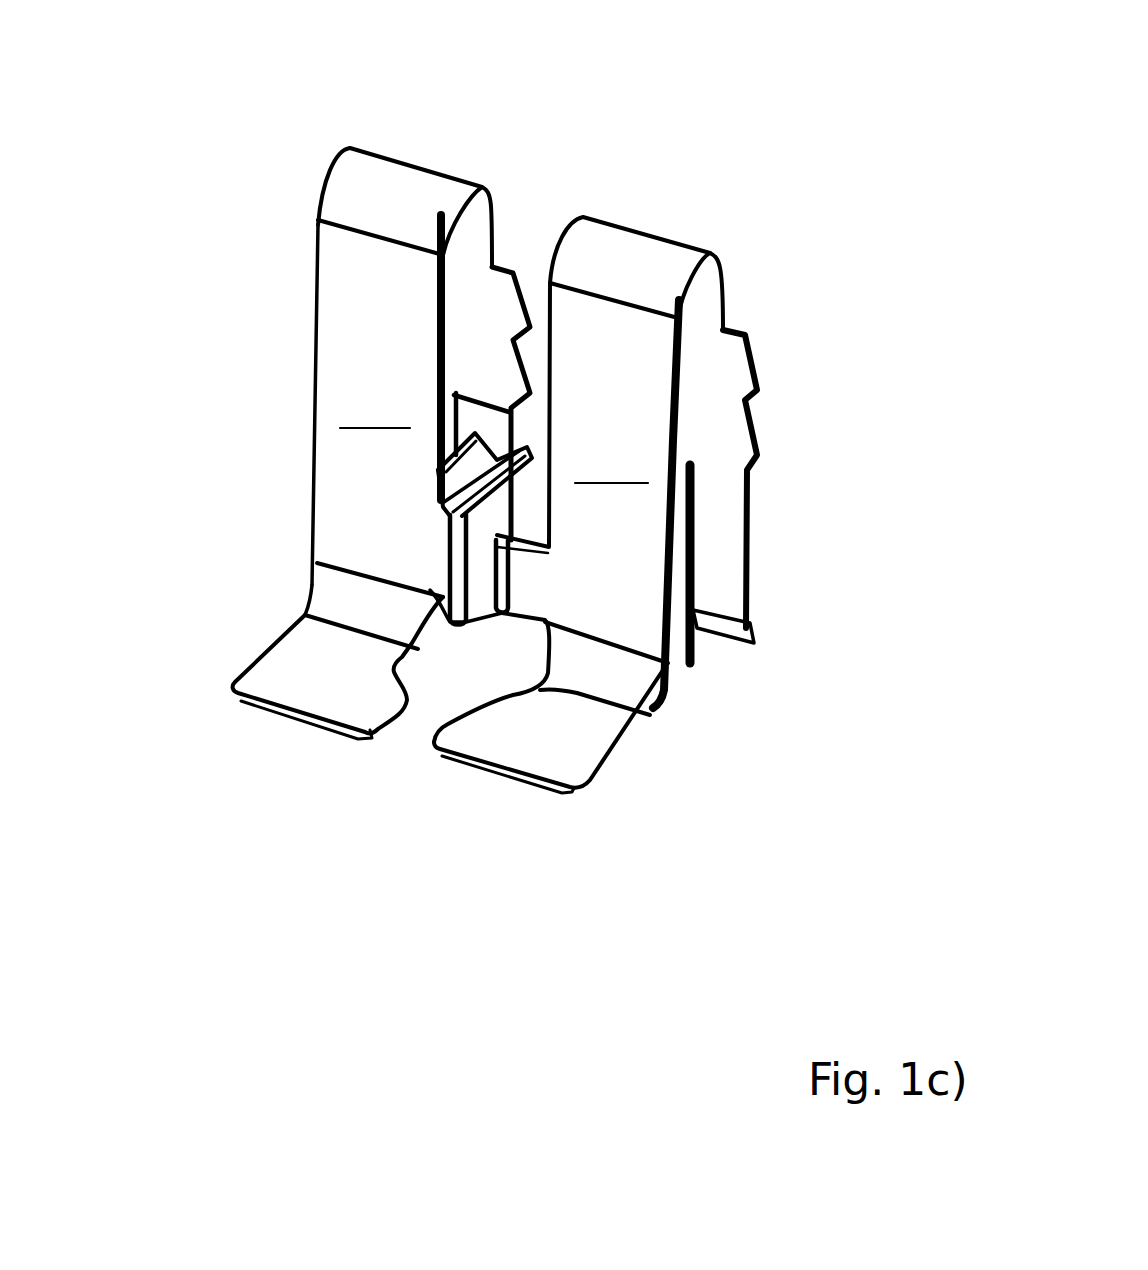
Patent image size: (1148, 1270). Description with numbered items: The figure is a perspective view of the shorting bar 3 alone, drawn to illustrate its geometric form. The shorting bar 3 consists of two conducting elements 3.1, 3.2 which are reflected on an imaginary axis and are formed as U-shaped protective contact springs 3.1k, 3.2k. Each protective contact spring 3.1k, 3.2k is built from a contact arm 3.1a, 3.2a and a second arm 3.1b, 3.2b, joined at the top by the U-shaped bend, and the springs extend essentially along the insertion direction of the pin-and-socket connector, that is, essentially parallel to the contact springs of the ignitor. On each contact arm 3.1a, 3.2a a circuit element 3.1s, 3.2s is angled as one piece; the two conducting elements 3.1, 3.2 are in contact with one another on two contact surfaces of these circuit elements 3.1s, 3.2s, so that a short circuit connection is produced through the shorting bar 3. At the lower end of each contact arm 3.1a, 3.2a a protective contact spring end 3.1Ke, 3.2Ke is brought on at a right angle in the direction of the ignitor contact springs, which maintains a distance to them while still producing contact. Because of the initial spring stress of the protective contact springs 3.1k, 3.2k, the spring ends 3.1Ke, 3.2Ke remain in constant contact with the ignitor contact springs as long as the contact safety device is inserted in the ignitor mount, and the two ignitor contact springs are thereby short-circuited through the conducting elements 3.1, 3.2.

The shorting bar 3 is at (208, 300).
The conducting element 3.1 is at (421, 128).
The contact arm 3.1a is at (352, 478).
The second arm 3.1b is at (473, 330).
The protective contact spring 3.1k is at (372, 409).
The circuit element 3.1s is at (455, 538).
The protective contact spring end 3.1Ke is at (300, 718).
The conducting element 3.2 is at (656, 188).
The contact arm 3.2a is at (615, 580).
The second arm 3.2b is at (700, 425).
The protective contact spring 3.2k is at (609, 465).
The circuit element 3.2s is at (478, 592).
The protective contact spring end 3.2Ke is at (520, 790).